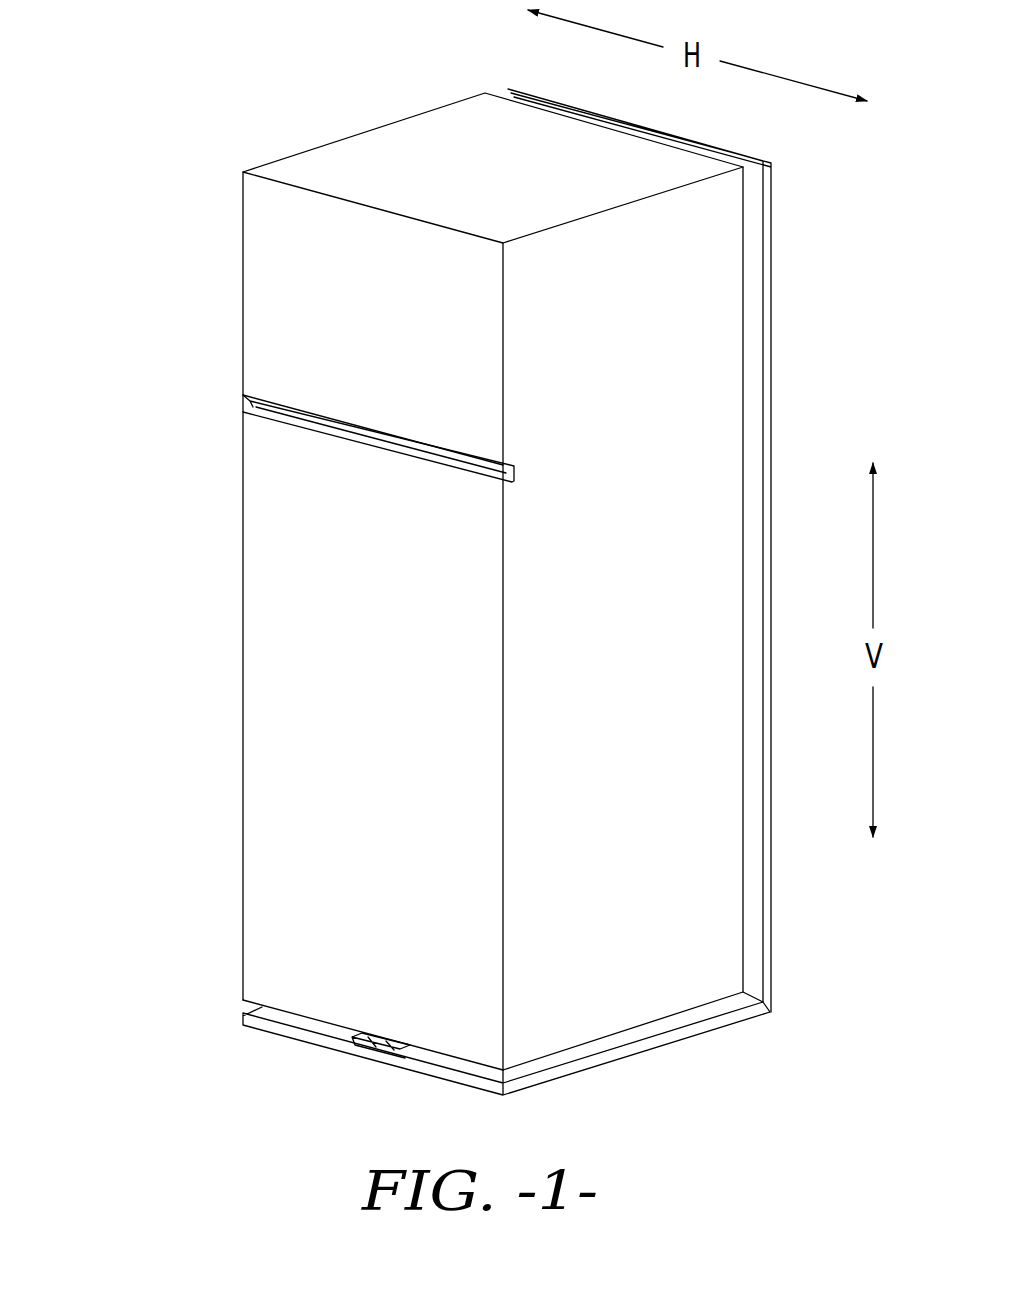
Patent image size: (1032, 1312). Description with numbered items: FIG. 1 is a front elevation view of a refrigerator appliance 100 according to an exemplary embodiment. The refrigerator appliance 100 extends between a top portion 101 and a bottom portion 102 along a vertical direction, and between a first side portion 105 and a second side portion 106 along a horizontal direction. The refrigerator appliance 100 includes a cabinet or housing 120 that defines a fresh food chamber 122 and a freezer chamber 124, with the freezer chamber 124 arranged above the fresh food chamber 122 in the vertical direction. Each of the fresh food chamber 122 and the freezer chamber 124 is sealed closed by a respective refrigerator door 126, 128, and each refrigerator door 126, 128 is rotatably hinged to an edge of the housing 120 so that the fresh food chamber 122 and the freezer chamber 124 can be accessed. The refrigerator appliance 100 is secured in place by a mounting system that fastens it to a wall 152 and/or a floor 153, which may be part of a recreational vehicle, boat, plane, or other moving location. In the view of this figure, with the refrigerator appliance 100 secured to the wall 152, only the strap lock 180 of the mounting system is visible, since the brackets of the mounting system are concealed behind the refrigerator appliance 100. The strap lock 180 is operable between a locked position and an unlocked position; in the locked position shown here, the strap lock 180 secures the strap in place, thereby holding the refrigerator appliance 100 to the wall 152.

The refrigerator appliance 100 is at (455, 614).
The top portion 101 is at (233, 173).
The bottom portion 102 is at (475, 1045).
The first side portion 105 is at (240, 160).
The second side portion 106 is at (500, 235).
The housing 120 is at (322, 647).
The fresh food chamber 122 is at (334, 767).
The freezer chamber 124 is at (338, 353).
The refrigerator door 126 is at (275, 515).
The refrigerator door 128 is at (274, 348).
The wall 152 is at (775, 413).
The floor 153 is at (524, 1066).
The strap lock 180 is at (367, 1045).